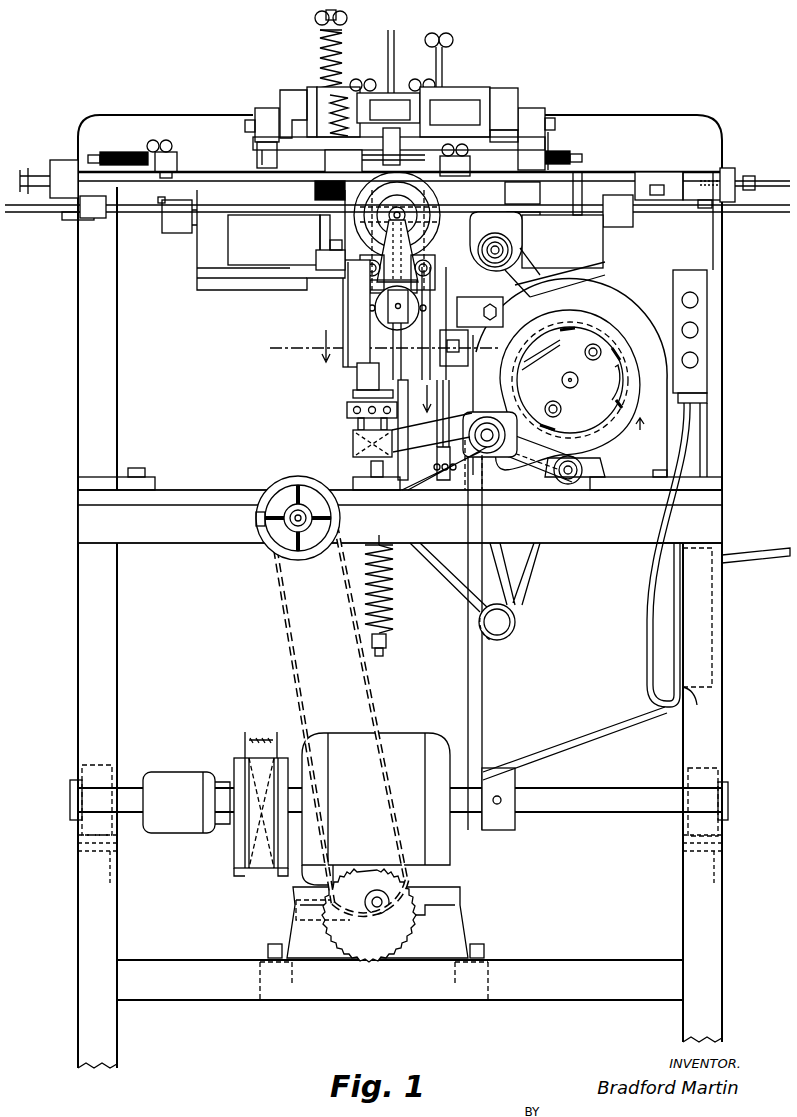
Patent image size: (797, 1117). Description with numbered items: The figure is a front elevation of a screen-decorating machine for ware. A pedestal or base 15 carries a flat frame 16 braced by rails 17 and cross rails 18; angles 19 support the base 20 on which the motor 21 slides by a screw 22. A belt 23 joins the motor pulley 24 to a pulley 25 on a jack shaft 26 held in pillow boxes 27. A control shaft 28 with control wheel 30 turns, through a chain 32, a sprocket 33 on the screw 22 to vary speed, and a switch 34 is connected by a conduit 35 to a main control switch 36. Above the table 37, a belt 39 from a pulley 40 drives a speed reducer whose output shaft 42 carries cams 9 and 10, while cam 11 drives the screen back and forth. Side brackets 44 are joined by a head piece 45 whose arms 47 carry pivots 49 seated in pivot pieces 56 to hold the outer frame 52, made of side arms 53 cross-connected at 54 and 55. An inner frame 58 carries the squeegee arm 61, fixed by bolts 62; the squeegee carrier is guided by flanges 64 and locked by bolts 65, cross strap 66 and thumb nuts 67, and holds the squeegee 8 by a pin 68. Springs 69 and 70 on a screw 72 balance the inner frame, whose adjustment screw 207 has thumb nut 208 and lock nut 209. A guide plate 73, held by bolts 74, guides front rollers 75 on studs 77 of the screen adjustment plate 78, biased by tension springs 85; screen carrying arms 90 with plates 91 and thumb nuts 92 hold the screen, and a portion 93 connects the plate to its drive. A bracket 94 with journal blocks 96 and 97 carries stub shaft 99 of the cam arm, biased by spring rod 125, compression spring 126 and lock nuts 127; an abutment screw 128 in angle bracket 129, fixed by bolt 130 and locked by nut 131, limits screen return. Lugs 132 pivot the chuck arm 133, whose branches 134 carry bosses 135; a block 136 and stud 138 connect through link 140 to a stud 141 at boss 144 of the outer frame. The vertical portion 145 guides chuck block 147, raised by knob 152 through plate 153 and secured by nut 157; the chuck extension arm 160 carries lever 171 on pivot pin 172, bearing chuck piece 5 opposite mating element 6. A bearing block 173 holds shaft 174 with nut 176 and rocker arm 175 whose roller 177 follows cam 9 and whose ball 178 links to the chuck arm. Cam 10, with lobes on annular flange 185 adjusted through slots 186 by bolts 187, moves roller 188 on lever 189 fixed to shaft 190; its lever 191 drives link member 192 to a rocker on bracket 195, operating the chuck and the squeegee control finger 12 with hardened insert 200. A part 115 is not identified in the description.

The chuck piece 5 is at (326, 340).
The mating chuck element 6 is at (377, 231).
The squeegee 8 is at (383, 158).
The drive cam 9 is at (626, 343).
The chuck cam 10 is at (605, 343).
The screen drive cam 11 is at (630, 302).
The squeegee control finger 12 is at (415, 207).
The pedestal or base 15 is at (718, 711).
The flat frame 16 is at (718, 521).
The rails 17 is at (591, 992).
The upper cross rails 18 is at (100, 866).
The angles 19 is at (290, 985).
The base 20 is at (462, 930).
The motor 21 is at (408, 742).
The rotatable screw 22 is at (366, 908).
The belt 23 is at (258, 738).
The motor pulley 24 is at (244, 742).
The pulley 25 is at (240, 849).
The jack shaft 26 is at (572, 795).
The pillow boxes 27 is at (86, 770).
The control shaft 28 is at (336, 519).
The control wheel 30 is at (292, 486).
The chain 32 is at (300, 620).
The sprocket 33 is at (377, 868).
The switch 34 is at (700, 325).
The conduit 35 is at (648, 598).
The main control switch 36 is at (698, 636).
The table 37 is at (92, 496).
The belt 39 is at (478, 685).
The pulley 40 is at (488, 762).
The output shaft 42 is at (574, 378).
The side brackets 44 is at (88, 404).
The head piece 45 is at (622, 126).
The arm portions 47 is at (262, 120).
The pointed pivot member 49 is at (255, 140).
The rectangular frame 52 is at (505, 102).
The side arms 53 is at (292, 108).
The angle portion 54 is at (555, 122).
The front cross-connection 55 is at (302, 127).
The pivot pieces 56 is at (250, 128).
The second frame 58 is at (496, 90).
The squeegee arm 61 is at (391, 90).
The bolts 62 is at (369, 80).
The marginal flanges 64 is at (345, 122).
The bolts 65 is at (363, 94).
The cross strap 66 is at (416, 80).
The thumb nuts 67 is at (445, 92).
The pin 68 is at (385, 152).
The compression spring 69 is at (312, 100).
The compression spring 70 is at (320, 55).
The screw 72 is at (316, 20).
The guide plate 73 is at (157, 231).
The bolts 74 is at (712, 208).
The front rollers 75 is at (76, 216).
The studs 77 is at (90, 218).
The screen adjustment plate 78 is at (212, 178).
The tension springs 85 is at (121, 155).
The screen carrying arms 90 is at (176, 162).
The plates 91 is at (168, 150).
The thumb nuts 92 is at (155, 141).
The portion 93 is at (50, 185).
The bracket 94 is at (520, 568).
The journal block 96 is at (500, 229).
The journal block 97 is at (512, 606).
The stub shaft 99 is at (503, 251).
The roller 115 is at (498, 622).
The spring rod 125 is at (371, 466).
The compression spring 126 is at (392, 565).
The lock nuts 127 is at (390, 641).
The abutment screw 128 is at (750, 176).
The angle bracket 129 is at (745, 186).
The bolt 130 is at (680, 190).
The nut 131 is at (730, 172).
The lugs 132 is at (192, 248).
The chuck arm 133 is at (342, 262).
The branches 134 is at (228, 279).
The bosses 135 is at (200, 266).
The block 136 is at (306, 274).
The stud 138 is at (320, 257).
The link 140 is at (332, 229).
The stud 141 is at (316, 192).
The boss 144 is at (340, 160).
The vertically extending portion 145 is at (360, 308).
The chuck block 147 is at (374, 376).
The knob 152 is at (350, 409).
The plate 153 is at (362, 396).
The nut 157 is at (358, 421).
The chuck extension arm 160 is at (342, 350).
The lever 171 is at (380, 316).
The pivot pin 172 is at (448, 300).
The bearing block 173 is at (497, 488).
The shaft 174 is at (484, 446).
The rocker arm 175 is at (585, 478).
The nut 176 is at (470, 478).
The roller 177 is at (588, 482).
The ball 178 is at (354, 445).
The annular flange 185 is at (710, 375).
The slots 186 is at (576, 362).
The bolts 187 is at (590, 343).
The roller 188 is at (583, 375).
The lever 189 is at (552, 470).
The shaft 190 is at (420, 500).
The lever 191 is at (442, 447).
The link member 192 is at (458, 356).
The bracket 195 is at (490, 326).
The metal insert 200 is at (420, 130).
The adjustment screw 207 is at (445, 60).
The thumb nut 208 is at (440, 45).
The lock thumb nut 209 is at (446, 80).